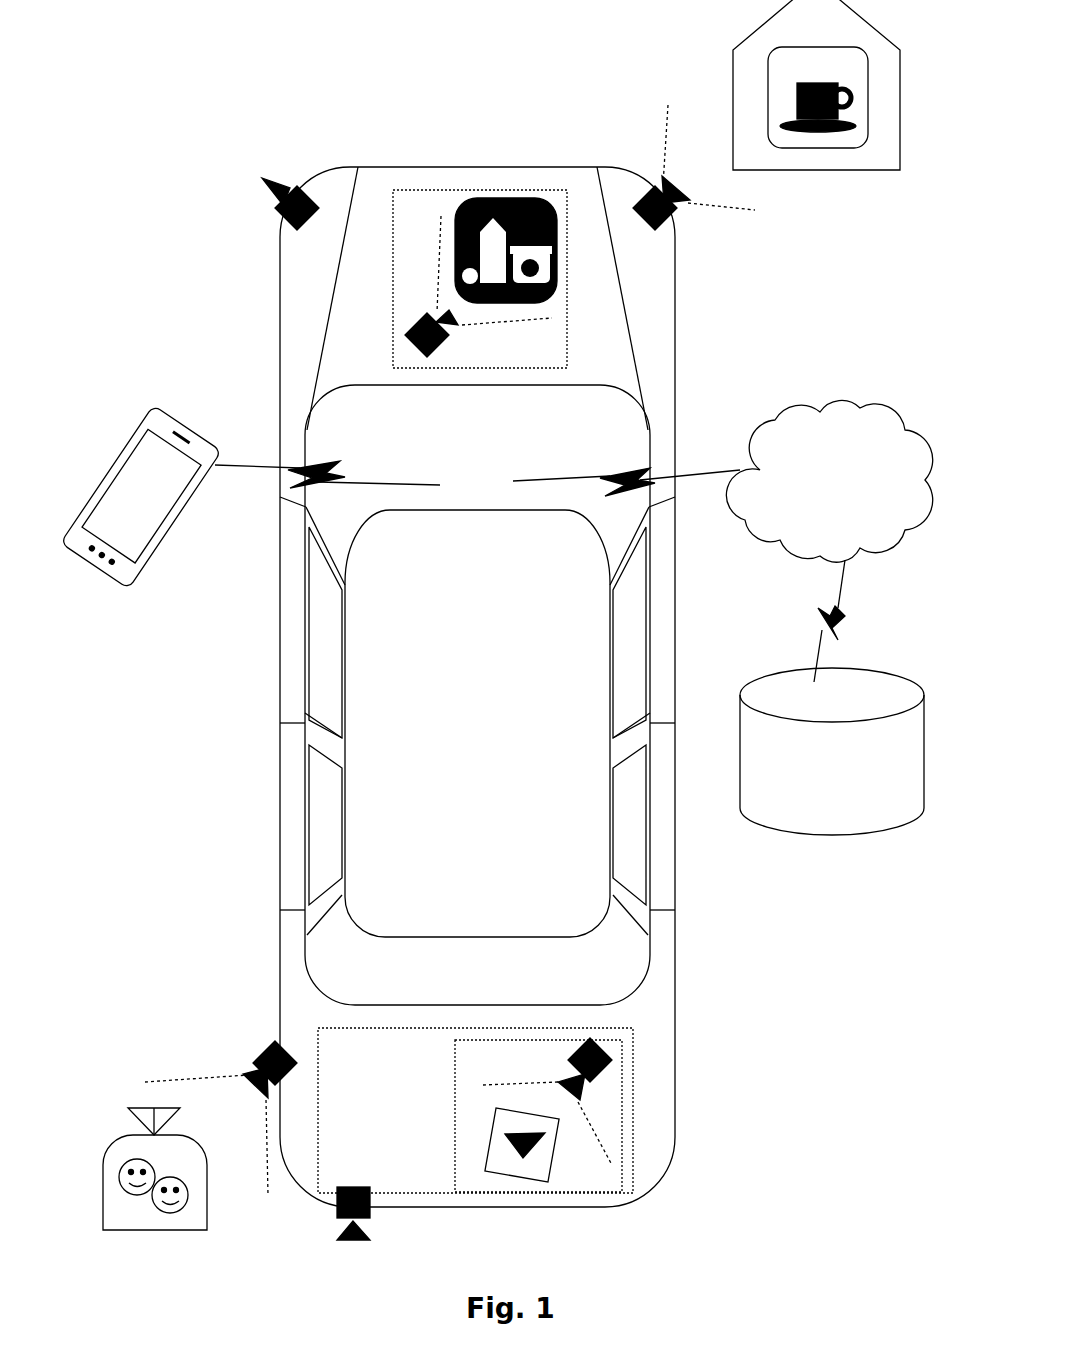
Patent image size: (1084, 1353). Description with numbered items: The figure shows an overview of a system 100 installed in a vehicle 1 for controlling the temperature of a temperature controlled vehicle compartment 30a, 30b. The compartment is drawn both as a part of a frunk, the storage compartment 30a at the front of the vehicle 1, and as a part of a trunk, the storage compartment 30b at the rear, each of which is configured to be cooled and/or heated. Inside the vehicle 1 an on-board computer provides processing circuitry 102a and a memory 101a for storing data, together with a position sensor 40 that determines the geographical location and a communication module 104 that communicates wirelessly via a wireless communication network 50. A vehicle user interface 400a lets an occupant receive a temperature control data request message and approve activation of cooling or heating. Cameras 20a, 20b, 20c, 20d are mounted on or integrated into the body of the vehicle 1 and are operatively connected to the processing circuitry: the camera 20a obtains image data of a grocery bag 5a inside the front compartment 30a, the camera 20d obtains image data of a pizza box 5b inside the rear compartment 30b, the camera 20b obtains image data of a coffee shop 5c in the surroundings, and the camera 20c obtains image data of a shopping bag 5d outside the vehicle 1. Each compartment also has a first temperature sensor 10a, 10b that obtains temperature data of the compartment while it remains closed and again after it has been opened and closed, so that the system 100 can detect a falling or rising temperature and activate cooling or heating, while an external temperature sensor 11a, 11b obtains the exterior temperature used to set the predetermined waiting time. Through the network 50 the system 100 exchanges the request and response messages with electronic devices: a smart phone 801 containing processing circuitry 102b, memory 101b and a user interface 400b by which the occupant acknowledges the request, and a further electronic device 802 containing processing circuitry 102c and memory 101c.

The vehicle 1 is at (708, 355).
The system 100 is at (198, 105).
The grocery bag 5a is at (458, 192).
The pizza box 5b is at (480, 1133).
The coffee shop 5c is at (840, 192).
The shopping bag 5d is at (155, 1186).
The first temperature sensor 10a is at (480, 279).
The first temperature sensor 10b is at (538, 1116).
The external temperature sensor 11a is at (510, 284).
The external temperature sensor 11b is at (475, 1110).
The camera 20a is at (405, 349).
The camera 20b is at (694, 173).
The camera 20c is at (221, 1114).
The camera 20d is at (630, 1058).
The temperature controlled vehicle compartment 30a is at (405, 254).
The temperature controlled vehicle compartment 30b is at (585, 1172).
The position sensor 40 is at (565, 418).
The wireless communication network 50 is at (829, 541).
The memory 101a is at (410, 414).
The processing circuitry 102a is at (410, 449).
The communication module 104 is at (477, 481).
The user interface 400a is at (473, 555).
The electronic device 801 is at (141, 516).
The memory 101b is at (166, 459).
The processing circuitry 102b is at (149, 484).
The user interface 400b is at (133, 509).
The electronic device 802 is at (832, 772).
The memory 101c is at (836, 755).
The processing circuitry 102c is at (836, 795).